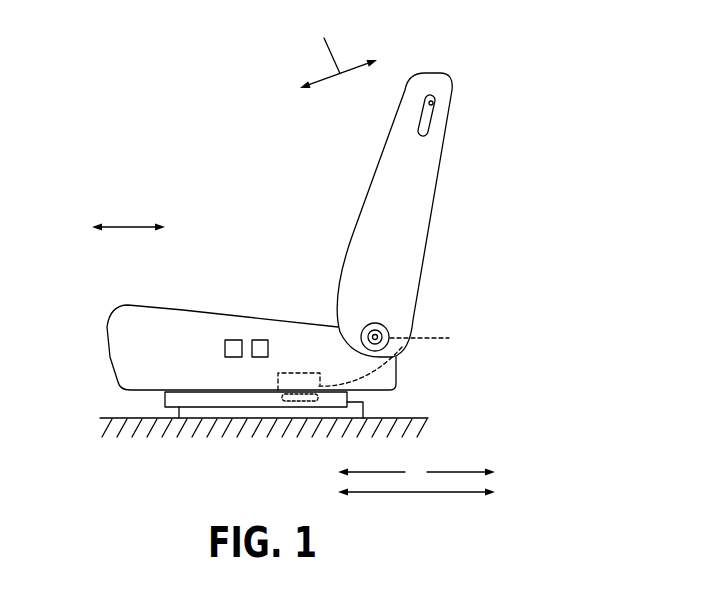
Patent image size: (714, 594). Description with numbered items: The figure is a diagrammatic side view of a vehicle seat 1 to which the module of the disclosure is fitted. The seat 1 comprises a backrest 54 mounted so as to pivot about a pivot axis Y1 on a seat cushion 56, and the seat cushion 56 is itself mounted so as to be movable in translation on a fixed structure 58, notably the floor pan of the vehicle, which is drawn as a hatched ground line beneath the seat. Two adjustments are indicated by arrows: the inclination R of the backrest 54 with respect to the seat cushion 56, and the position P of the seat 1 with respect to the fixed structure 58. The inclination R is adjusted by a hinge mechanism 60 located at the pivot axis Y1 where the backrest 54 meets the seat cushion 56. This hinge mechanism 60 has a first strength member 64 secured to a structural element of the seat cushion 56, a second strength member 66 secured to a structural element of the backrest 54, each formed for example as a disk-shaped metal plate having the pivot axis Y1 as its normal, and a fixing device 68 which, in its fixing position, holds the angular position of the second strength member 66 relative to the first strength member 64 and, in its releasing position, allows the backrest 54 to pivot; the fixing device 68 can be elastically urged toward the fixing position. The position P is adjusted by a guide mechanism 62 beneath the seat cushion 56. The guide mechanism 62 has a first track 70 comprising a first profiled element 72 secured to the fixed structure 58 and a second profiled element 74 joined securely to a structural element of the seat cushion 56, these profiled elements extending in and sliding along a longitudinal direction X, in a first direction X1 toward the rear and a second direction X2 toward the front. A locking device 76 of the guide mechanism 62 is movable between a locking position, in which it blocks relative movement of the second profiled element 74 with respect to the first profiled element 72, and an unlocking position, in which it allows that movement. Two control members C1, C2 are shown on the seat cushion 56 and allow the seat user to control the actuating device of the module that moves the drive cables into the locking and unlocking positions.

The vehicle seat 1 is at (303, 138).
The backrest 54 is at (427, 158).
The seat cushion 56 is at (158, 328).
The fixed structure 58 is at (112, 417).
The hinge mechanism 60 is at (456, 332).
The guide mechanism 62 is at (321, 361).
The first strength member 64 is at (456, 350).
The second strength member 66 is at (375, 337).
The fixing device 68 is at (402, 350).
The first track 70 is at (378, 403).
The first profiled element 72 is at (278, 408).
The second profiled element 74 is at (218, 398).
The locking device 76 is at (291, 364).
The control member C1 is at (228, 339).
The control member C2 is at (256, 340).
The pivot axis Y1 is at (436, 338).
The inclination R is at (338, 50).
The position P is at (128, 213).
The first direction X1 is at (371, 459).
The second direction X2 is at (461, 459).
The longitudinal direction X is at (416, 505).